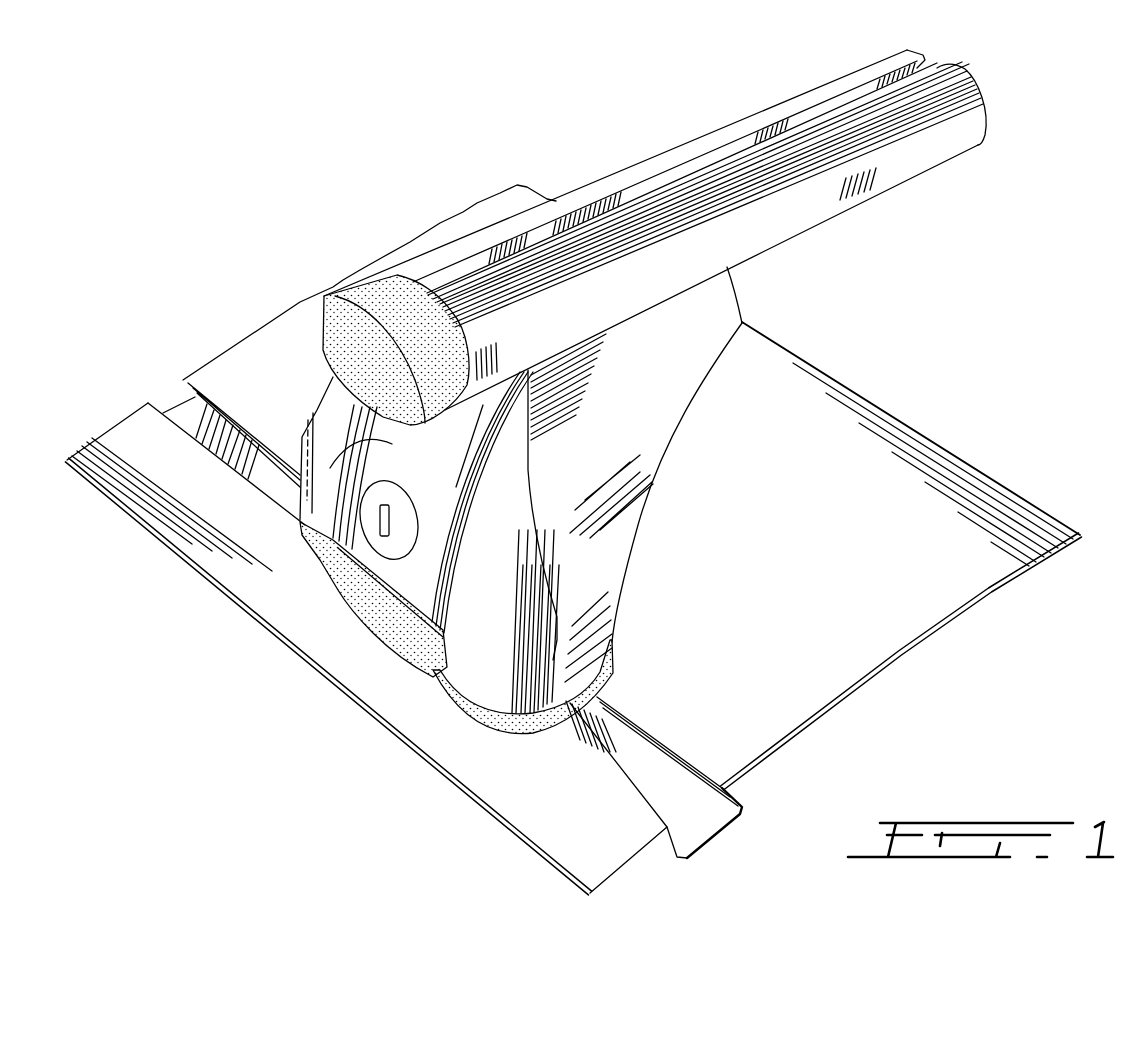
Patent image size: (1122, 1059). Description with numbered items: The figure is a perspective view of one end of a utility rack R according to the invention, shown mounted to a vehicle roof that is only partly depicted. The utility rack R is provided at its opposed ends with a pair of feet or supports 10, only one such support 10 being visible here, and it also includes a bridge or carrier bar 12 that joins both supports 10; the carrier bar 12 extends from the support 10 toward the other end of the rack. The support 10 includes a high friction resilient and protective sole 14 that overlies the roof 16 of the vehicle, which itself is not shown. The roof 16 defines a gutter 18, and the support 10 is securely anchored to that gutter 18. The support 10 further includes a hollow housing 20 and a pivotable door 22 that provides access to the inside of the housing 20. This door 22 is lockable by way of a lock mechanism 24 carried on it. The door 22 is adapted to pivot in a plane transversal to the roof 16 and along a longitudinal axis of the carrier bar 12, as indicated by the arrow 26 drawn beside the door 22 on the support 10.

The utility rack R is at (649, 392).
The support 10 is at (499, 500).
The carrier bar 12 is at (951, 156).
The sole 14 is at (607, 680).
The roof 16 is at (576, 540).
The gutter 18 is at (713, 813).
The housing 20 is at (598, 465).
The door 22 is at (437, 500).
The lock mechanism 24 is at (395, 558).
The arrow 26 is at (335, 492).